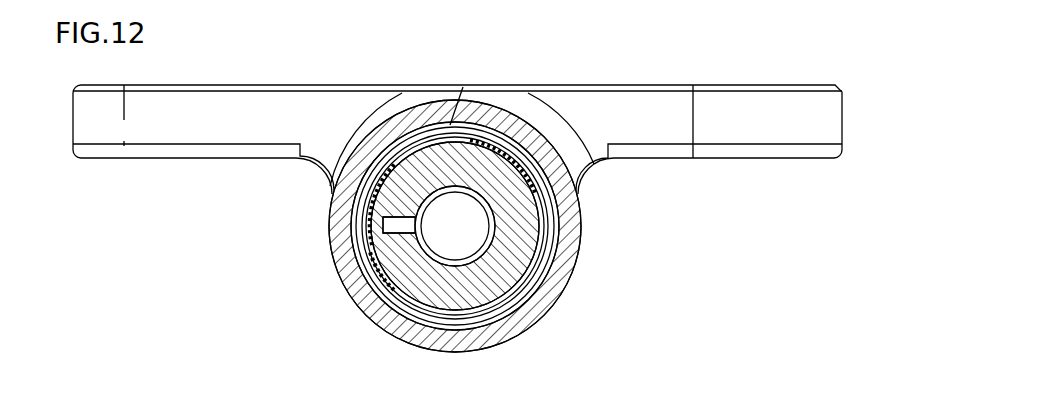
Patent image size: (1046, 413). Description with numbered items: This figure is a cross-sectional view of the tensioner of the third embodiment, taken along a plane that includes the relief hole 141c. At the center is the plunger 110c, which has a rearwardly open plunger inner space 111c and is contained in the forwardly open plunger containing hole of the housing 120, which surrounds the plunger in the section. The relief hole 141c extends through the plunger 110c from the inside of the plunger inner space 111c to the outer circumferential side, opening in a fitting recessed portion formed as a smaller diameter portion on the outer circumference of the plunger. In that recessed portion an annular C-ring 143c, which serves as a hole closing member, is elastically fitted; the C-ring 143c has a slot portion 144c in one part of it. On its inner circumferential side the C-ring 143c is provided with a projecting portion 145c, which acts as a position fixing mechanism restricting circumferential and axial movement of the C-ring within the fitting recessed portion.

The plunger 110c is at (462, 230).
The plunger inner space 111c is at (493, 243).
The housing 120 is at (558, 296).
The relief hole 141c is at (330, 188).
The C-ring 143c is at (382, 304).
The slot portion 144c is at (458, 128).
The projecting portion 145c is at (362, 267).